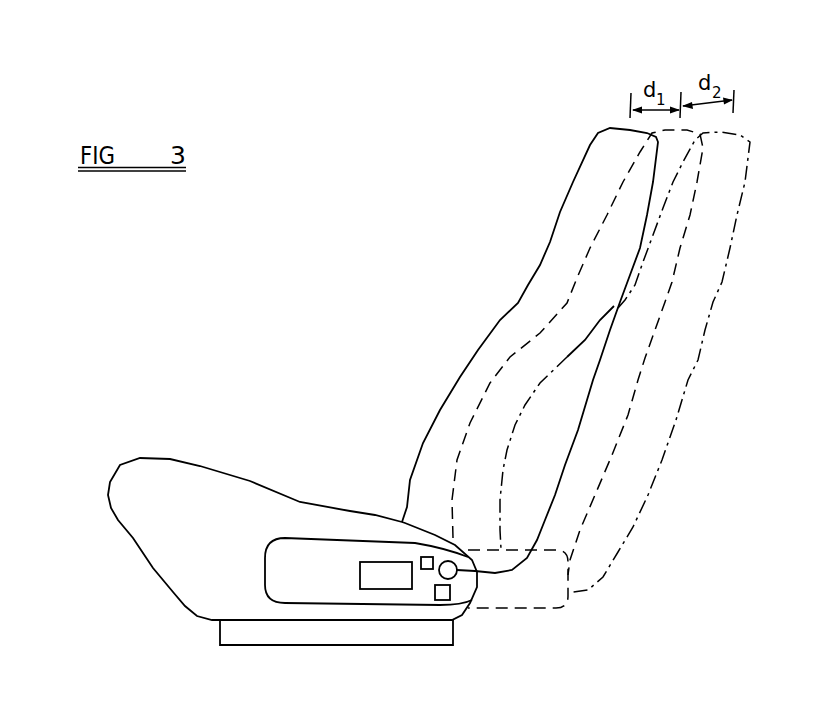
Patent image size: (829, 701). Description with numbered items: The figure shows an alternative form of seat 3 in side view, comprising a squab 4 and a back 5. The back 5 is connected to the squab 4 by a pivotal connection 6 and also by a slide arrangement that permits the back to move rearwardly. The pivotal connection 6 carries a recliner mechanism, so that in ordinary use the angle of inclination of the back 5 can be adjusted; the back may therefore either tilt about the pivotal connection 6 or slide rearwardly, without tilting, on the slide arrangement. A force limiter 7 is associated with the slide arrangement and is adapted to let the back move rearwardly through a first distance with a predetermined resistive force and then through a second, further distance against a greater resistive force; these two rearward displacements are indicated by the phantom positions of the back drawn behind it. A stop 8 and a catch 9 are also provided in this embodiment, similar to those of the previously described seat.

The seat 3 is at (262, 415).
The squab 4 is at (193, 468).
The back 5 is at (548, 200).
The pivotal connection 6 is at (457, 570).
The force limiter 7 is at (398, 583).
The stop 8 is at (450, 592).
The catch 9 is at (422, 558).